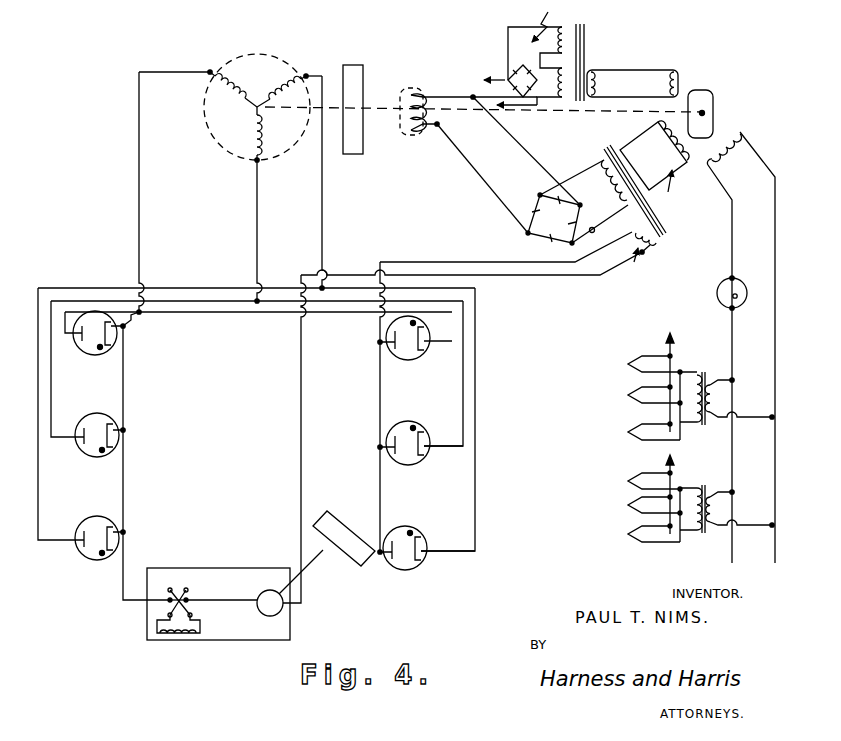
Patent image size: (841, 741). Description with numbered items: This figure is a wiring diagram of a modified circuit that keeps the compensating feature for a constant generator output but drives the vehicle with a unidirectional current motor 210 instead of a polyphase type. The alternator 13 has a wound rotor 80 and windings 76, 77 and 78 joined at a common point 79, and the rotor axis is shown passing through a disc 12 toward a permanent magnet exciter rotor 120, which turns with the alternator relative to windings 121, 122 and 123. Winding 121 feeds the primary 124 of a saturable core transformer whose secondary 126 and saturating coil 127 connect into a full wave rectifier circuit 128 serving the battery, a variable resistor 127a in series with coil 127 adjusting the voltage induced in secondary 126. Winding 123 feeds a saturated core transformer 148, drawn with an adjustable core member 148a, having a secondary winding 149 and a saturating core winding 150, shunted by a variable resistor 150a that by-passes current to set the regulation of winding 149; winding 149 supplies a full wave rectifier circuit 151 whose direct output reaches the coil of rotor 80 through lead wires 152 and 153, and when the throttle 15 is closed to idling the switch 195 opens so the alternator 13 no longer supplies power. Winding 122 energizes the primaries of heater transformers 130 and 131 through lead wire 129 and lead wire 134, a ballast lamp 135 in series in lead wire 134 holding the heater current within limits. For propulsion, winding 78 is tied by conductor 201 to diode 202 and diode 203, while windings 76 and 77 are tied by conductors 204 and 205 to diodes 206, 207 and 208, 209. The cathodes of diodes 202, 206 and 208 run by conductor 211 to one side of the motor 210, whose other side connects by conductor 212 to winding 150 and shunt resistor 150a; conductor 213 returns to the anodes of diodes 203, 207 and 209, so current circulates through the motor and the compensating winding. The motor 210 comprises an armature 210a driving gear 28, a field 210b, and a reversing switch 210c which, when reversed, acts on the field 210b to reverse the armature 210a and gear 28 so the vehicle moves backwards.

The alternator 13 is at (283, 60).
The alternator winding 78 is at (233, 86).
The common point of alternator 79 is at (262, 95).
The alternator winding 77 is at (250, 128).
The alternator winding 76 is at (482, 104).
The disc 12 is at (364, 72).
The wound rotor 80 is at (420, 86).
The variable resistor 127a is at (524, 21).
The saturating coil 127 is at (560, 42).
The full wave rectifier circuit 128 is at (505, 84).
The secondary 126 is at (531, 89).
The primary 124 is at (597, 84).
The alternator winding 121 is at (679, 73).
The permanent magnet exciter rotor 120 is at (714, 100).
The lead wire 152 is at (522, 150).
The lead wire 153 is at (453, 147).
The full wave rectifier circuit 151 is at (537, 188).
The switch 195 is at (598, 229).
The throttle 15 is at (593, 244).
The saturated core type transformer 148 is at (604, 148).
The secondary winding 149 is at (607, 183).
The alternator winding 123 is at (655, 154).
The adjustable core member 148a is at (670, 190).
The saturating core winding 150 is at (644, 228).
The variable resistor 150a is at (618, 258).
The alternator winding 122 is at (722, 167).
The lead wire 129 is at (776, 228).
The ballast lamp 135 is at (717, 293).
The lead wire 134 is at (732, 322).
The transformer 130 is at (702, 373).
The transformer 131 is at (702, 488).
The conductor 201 is at (140, 178).
The conductor 205 is at (258, 216).
The conductor 204 is at (323, 190).
The conductor 213 is at (496, 262).
The conductor 212 is at (550, 285).
The conductor 211 is at (124, 466).
The diode 202 is at (92, 355).
The diode 208 is at (93, 457).
The diode 206 is at (95, 560).
The diode 203 is at (408, 360).
The diode 209 is at (406, 465).
The diode 207 is at (408, 570).
The gear 28 is at (352, 568).
The unidirectional current motor 210 is at (218, 597).
The reversing switch 210c is at (172, 588).
The field 210b is at (192, 617).
The armature 210a is at (262, 614).